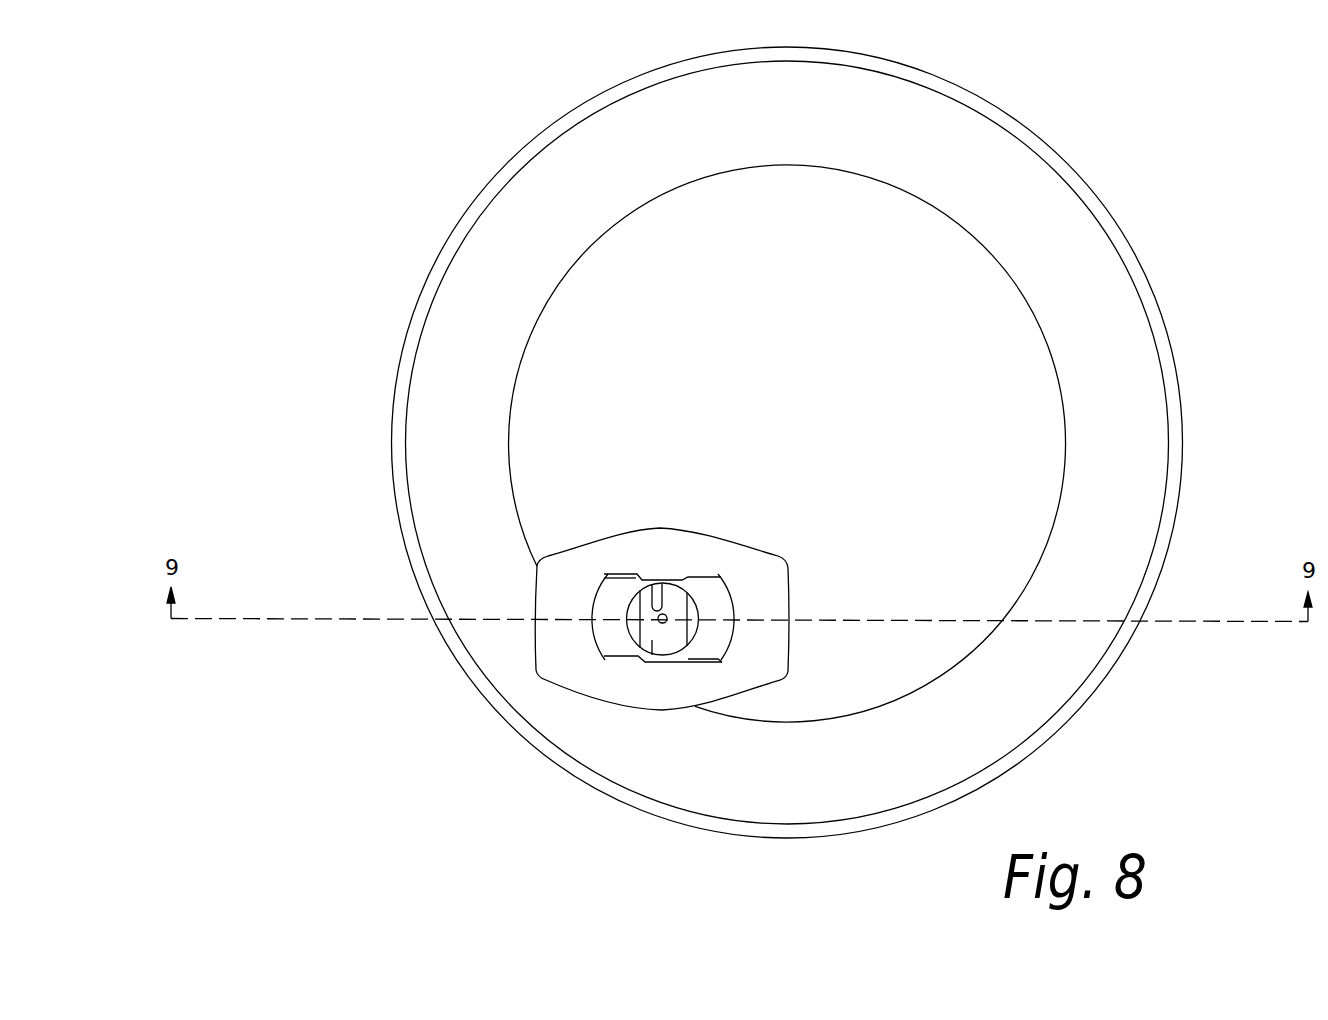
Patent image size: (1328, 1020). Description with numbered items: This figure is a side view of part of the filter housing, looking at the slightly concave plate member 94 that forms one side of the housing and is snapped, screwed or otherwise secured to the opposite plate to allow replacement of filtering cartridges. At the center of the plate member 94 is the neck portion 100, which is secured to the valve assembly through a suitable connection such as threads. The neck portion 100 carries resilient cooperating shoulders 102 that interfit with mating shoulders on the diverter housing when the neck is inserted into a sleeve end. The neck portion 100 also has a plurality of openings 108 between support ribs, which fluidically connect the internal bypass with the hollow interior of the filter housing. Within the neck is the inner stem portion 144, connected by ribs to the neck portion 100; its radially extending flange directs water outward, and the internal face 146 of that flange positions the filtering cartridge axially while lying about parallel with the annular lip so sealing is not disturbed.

The plate member 94 is at (846, 341).
The neck portion 100 is at (677, 556).
The shoulder 102 is at (713, 605).
The opening 108 is at (654, 596).
The inner stem portion 144 is at (663, 623).
The internal face 146 is at (652, 645).